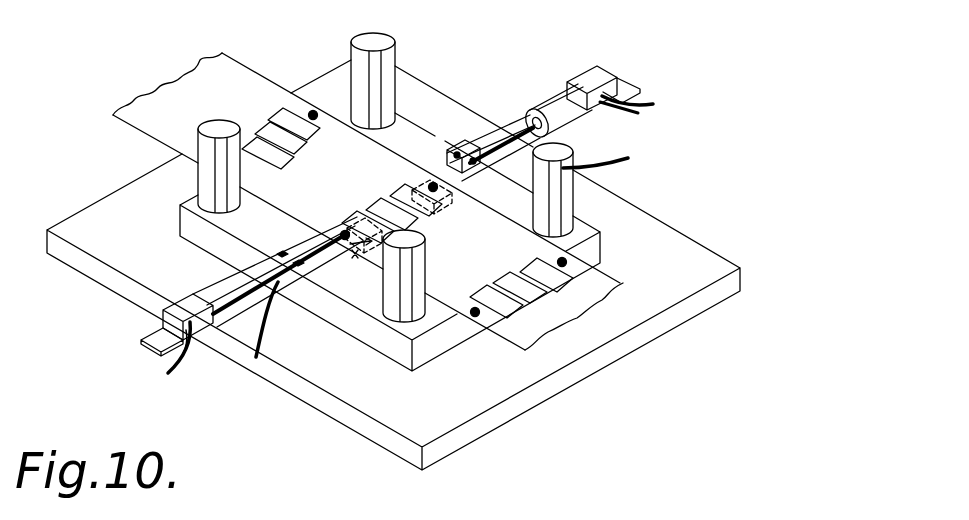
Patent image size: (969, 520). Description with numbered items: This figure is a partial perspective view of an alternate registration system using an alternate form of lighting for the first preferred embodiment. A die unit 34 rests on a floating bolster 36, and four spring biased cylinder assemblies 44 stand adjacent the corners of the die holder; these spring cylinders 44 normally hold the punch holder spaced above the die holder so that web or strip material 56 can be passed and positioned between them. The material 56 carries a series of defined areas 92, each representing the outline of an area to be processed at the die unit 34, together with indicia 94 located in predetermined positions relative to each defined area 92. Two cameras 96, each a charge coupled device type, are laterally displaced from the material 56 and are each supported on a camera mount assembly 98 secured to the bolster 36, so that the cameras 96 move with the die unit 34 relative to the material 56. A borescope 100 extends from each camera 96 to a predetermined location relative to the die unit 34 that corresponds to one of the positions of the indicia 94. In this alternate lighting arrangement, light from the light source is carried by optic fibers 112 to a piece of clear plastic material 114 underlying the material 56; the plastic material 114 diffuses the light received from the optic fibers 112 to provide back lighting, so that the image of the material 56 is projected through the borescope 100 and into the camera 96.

The die unit 34 is at (617, 248).
The floating bolster 36 is at (745, 282).
The spring biased cylinder assemblies 44 is at (383, 65).
The web or strip material 56 is at (612, 289).
The defined areas 92 is at (283, 116).
The indicia 94 is at (313, 111).
The cameras 96 is at (183, 302).
The camera mount assembly 98 is at (162, 341).
The borescope 100 is at (547, 100).
The optic fibers 112 is at (257, 362).
The clear plastic material 114 is at (418, 184).